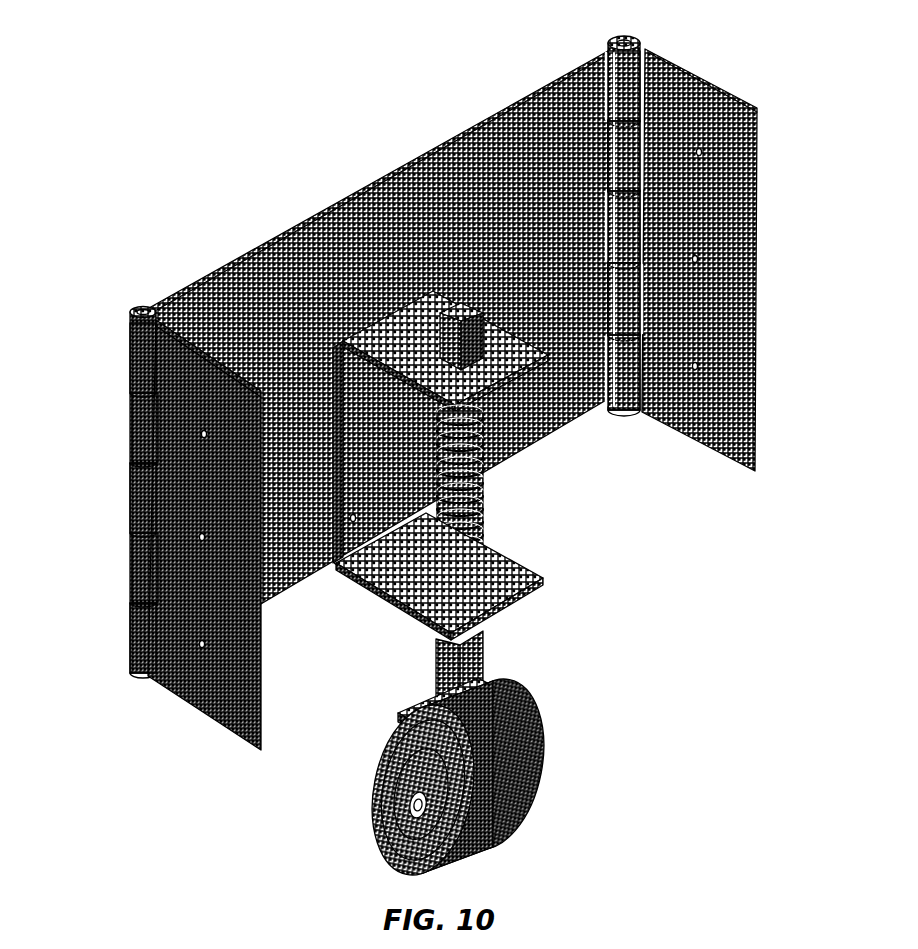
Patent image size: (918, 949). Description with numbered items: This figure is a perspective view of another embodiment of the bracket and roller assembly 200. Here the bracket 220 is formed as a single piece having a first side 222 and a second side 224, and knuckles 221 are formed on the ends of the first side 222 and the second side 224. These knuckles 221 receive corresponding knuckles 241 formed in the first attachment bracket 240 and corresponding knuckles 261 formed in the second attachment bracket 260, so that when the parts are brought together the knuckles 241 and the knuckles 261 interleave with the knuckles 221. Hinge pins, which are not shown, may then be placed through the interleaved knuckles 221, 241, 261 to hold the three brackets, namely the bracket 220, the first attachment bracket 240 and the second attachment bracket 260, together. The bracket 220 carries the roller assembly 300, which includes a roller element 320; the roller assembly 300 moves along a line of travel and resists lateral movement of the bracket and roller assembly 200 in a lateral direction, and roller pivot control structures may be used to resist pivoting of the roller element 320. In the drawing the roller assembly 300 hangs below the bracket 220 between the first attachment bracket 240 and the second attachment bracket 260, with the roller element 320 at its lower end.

The bracket and roller assembly 200 is at (212, 52).
The bracket 220 is at (315, 194).
The knuckles 221 is at (122, 346).
The first side 222 is at (181, 274).
The second side 224 is at (569, 50).
The first attachment bracket 240 is at (177, 706).
The knuckles 241 is at (122, 417).
The second attachment bracket 260 is at (704, 76).
The knuckles 261 is at (619, 151).
The roller assembly 300 is at (574, 599).
The roller element 320 is at (530, 773).